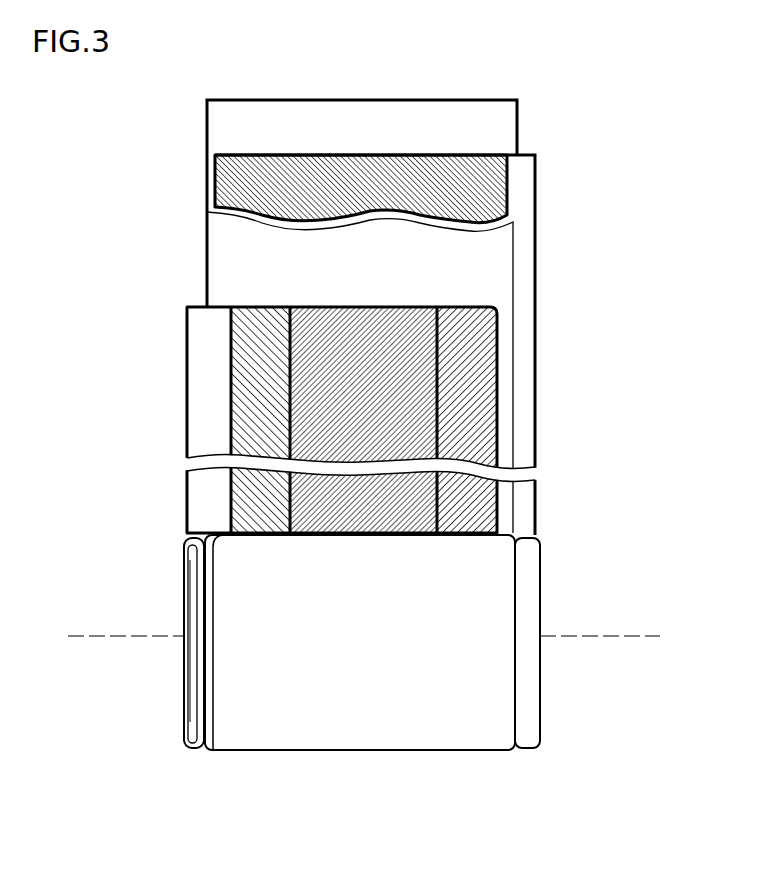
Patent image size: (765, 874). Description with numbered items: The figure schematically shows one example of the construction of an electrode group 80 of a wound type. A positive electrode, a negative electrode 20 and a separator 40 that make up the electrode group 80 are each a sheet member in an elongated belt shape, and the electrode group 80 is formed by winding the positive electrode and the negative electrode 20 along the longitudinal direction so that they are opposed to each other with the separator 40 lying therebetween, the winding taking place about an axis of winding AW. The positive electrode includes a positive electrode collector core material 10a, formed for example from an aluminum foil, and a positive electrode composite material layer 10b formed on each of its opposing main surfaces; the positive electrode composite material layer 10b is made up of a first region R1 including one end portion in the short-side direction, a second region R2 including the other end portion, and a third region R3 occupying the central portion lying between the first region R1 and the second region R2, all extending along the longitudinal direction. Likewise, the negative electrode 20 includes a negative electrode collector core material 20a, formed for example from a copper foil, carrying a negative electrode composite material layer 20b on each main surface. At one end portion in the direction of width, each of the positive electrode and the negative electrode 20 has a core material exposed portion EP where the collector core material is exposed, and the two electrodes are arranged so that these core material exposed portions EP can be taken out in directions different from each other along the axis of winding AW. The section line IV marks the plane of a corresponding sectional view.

The separator 40 is at (276, 100).
The negative electrode 20 is at (427, 311).
The negative electrode collector core material 20a is at (524, 155).
The negative electrode composite material layer 20b is at (478, 153).
The positive electrode collector core material 10a is at (203, 305).
The positive electrode composite material layer 10b is at (287, 351).
The first region R1 is at (252, 307).
The second region R2 is at (462, 307).
The third region R3 is at (360, 307).
The core material exposed portion EP is at (207, 438).
The section line IV is at (153, 346).
The electrode group 80 is at (516, 779).
The axis of winding AW is at (607, 636).